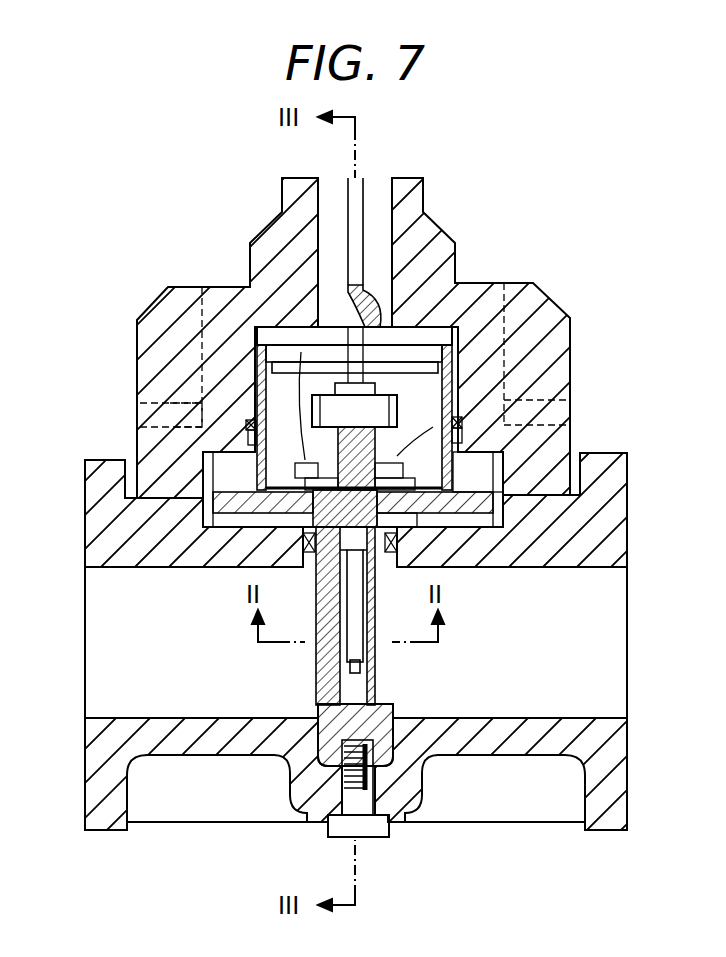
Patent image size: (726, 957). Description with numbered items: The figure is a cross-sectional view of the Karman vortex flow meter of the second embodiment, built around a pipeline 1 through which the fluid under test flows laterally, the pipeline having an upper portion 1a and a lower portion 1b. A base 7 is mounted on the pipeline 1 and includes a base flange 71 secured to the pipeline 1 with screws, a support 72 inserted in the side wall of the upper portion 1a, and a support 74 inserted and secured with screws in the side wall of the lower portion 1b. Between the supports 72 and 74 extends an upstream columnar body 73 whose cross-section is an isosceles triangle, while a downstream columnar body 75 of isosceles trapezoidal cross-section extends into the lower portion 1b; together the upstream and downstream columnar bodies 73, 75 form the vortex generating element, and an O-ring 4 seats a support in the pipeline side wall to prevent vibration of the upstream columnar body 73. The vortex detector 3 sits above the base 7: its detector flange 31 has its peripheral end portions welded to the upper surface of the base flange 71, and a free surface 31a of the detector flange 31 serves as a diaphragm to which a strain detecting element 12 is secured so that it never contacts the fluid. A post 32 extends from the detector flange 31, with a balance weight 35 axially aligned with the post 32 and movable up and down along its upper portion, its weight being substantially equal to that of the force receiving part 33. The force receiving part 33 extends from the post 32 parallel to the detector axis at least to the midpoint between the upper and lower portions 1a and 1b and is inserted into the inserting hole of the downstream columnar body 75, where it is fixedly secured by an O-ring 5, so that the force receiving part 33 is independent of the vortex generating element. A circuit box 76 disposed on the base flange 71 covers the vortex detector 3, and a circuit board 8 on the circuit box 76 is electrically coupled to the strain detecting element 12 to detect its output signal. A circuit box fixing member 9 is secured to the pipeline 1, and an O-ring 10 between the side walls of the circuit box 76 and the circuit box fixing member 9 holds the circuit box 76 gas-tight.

The pipeline 1 is at (605, 640).
The upper portion of pipeline 1a is at (613, 538).
The lower portion of pipeline 1b is at (596, 806).
The vortex detector 3 is at (410, 385).
The O-ring 4 is at (390, 553).
The O-ring 5 is at (365, 662).
The base 7 is at (507, 452).
The circuit board 8 is at (432, 343).
The circuit box fixing member 9 is at (547, 312).
The O-ring 10 is at (340, 448).
The strain detecting element 12 is at (480, 478).
The detector flange 31 is at (267, 483).
The free surface 31a is at (170, 403).
The post 32 is at (258, 370).
The force receiving part 33 is at (357, 637).
The balance weight 35 is at (328, 402).
The base flange 71 is at (483, 502).
The support 72 is at (318, 575).
The upstream columnar body 73 is at (333, 685).
The support 74 is at (320, 755).
The downstream columnar body 75 is at (370, 688).
The circuit box 76 is at (442, 365).